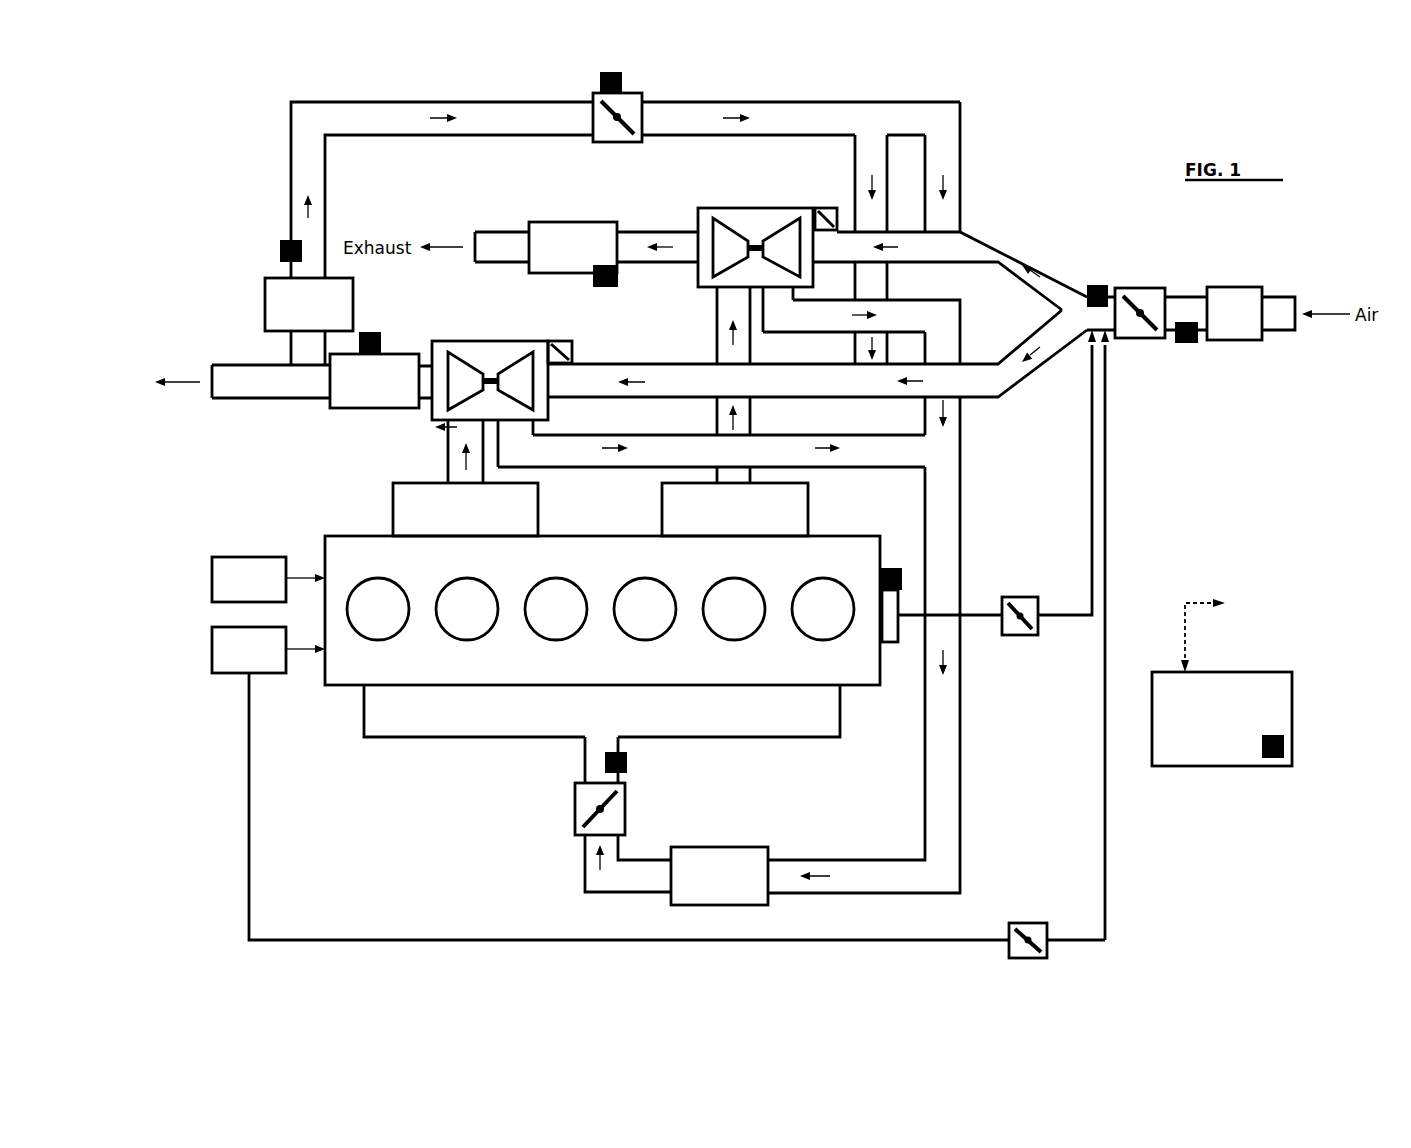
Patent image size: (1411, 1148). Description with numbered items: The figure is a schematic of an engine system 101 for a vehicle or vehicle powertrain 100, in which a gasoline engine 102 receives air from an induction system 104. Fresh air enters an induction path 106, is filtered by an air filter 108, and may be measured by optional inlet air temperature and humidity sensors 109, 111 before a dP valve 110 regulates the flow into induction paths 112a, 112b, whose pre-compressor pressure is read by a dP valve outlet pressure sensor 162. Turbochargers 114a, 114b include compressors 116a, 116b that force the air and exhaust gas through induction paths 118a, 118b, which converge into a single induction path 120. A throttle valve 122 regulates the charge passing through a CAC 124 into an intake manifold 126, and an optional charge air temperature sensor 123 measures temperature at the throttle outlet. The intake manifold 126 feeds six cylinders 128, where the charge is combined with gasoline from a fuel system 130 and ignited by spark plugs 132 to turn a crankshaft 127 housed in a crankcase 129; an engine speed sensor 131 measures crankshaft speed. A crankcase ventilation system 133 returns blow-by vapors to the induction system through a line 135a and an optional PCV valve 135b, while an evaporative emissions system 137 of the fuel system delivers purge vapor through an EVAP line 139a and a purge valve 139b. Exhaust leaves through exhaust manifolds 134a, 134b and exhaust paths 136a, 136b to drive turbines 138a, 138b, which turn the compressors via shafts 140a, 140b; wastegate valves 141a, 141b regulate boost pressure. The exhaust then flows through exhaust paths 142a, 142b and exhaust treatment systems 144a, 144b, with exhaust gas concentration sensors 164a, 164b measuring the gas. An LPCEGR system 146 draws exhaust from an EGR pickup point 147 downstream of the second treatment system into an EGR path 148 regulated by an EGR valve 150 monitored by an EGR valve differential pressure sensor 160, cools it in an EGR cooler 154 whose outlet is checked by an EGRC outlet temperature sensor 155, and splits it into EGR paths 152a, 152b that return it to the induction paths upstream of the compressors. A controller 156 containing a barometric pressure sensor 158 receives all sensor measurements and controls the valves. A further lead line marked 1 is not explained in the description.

The vehicle powertrain 100 is at (1170, 75).
The vehicle 1 is at (1235, 483).
The engine system 101 is at (217, 763).
The gasoline engine 102 is at (592, 588).
The induction system 104 is at (508, 868).
The induction path 106 is at (1284, 330).
The air filter 108 is at (1238, 287).
The inlet air temperature sensor 109 is at (1238, 376).
The humidity sensor 111 is at (1195, 345).
The dP valve 110 is at (1167, 288).
The induction path 112a is at (962, 230).
The induction path 112b is at (962, 400).
The turbocharger 114a is at (695, 277).
The turbocharger 114b is at (440, 430).
The compressor 116a is at (785, 219).
The compressor 116b is at (516, 352).
The induction path 118a is at (962, 343).
The induction path 118b is at (843, 468).
The single induction path 120 is at (962, 506).
The throttle valve 122 is at (575, 809).
The charge air temperature sensor 123 is at (605, 762).
The CAC 124 is at (716, 847).
The intake manifold 126 is at (429, 737).
The crankshaft 127 is at (853, 692).
The crankcase 129 is at (890, 642).
The cylinders 128 is at (391, 638).
The fuel system 130 is at (212, 649).
The engine speed sensor 131 is at (902, 578).
The spark plugs 132 is at (248, 557).
The crankcase ventilation system 133 is at (1018, 690).
The exhaust manifold 134a is at (662, 495).
The exhaust manifold 134b is at (540, 511).
The line 135a is at (1040, 623).
The positive crankcase ventilation valve 135b is at (1020, 597).
The exhaust path 136a is at (715, 320).
The exhaust path 136b is at (485, 452).
The evaporative emissions system 137 is at (1140, 893).
The turbine 138a is at (785, 238).
The turbine 138b is at (498, 385).
The EVAP line 139a is at (249, 903).
The purge valve 139b is at (1028, 923).
The shaft 140a is at (757, 242).
The shaft 140b is at (488, 364).
The wastegate valve 141a is at (838, 232).
The wastegate valve 141b is at (572, 352).
The exhaust path 142a is at (499, 230).
The exhaust path 142b is at (224, 365).
The exhaust treatment system 144a is at (568, 222).
The exhaust treatment system 144b is at (341, 408).
The LPCEGR system 146 is at (250, 148).
The EGR pickup point 147 is at (308, 367).
The EGR path 148 is at (448, 102).
The EGR valve 150 is at (620, 143).
The EGR path 152a is at (963, 166).
The EGR path 152b is at (856, 162).
The EGR cooler 154 is at (265, 306).
The EGRC outlet temperature sensor 155 is at (280, 250).
The controller 156 is at (1221, 766).
The barometric pressure sensor 158 is at (1274, 758).
The EGR valve differential pressure sensor 160 is at (600, 80).
The dP valve outlet pressure sensor 162 is at (1092, 285).
The exhaust gas concentration sensor 164a is at (612, 288).
The exhaust gas concentration sensor 164b is at (381, 332).